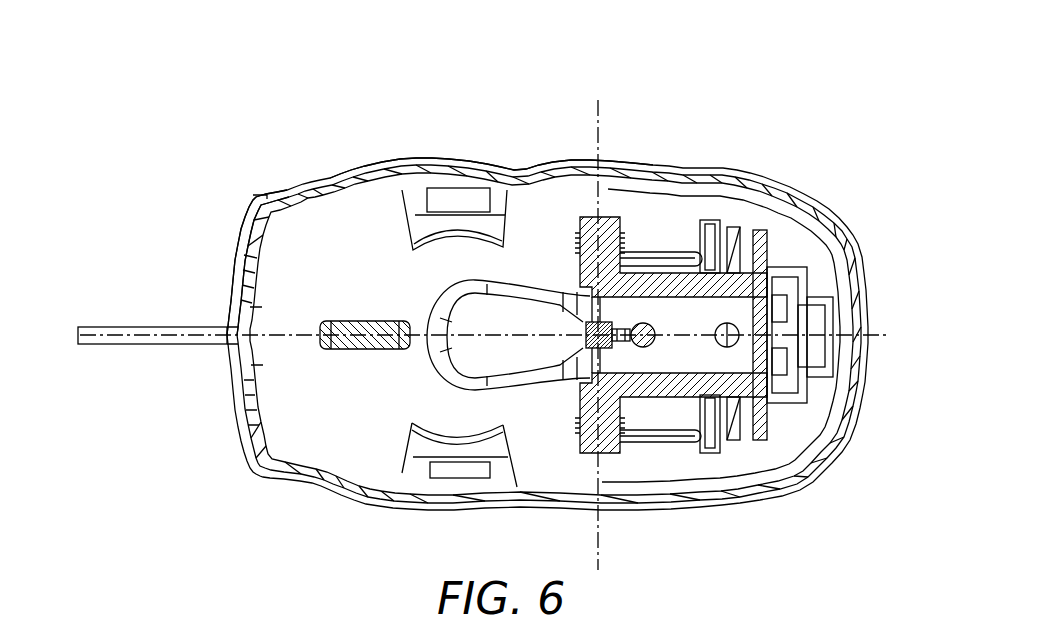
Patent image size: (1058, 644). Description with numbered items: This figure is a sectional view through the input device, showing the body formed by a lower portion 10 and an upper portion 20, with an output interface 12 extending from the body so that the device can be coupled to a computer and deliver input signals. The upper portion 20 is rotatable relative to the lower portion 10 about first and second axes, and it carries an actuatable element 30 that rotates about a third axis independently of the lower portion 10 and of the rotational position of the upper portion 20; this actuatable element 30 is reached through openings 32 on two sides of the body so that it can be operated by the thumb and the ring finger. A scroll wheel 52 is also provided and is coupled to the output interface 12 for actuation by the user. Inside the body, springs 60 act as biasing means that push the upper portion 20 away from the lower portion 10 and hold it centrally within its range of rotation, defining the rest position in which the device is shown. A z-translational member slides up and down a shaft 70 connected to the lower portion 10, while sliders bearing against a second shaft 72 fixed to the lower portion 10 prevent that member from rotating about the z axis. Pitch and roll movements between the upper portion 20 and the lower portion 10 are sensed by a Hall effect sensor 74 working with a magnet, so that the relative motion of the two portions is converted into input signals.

The lower portion 10 is at (738, 492).
The output interface 12 is at (127, 333).
The upper portion 20 is at (263, 198).
The actuatable element 30 is at (437, 165).
The openings 32 is at (423, 448).
The scroll wheel 52 is at (320, 339).
The springs 60 is at (627, 230).
The shaft 70 is at (717, 327).
The second shaft 72 is at (742, 325).
The Hall effect sensor 74 is at (592, 355).